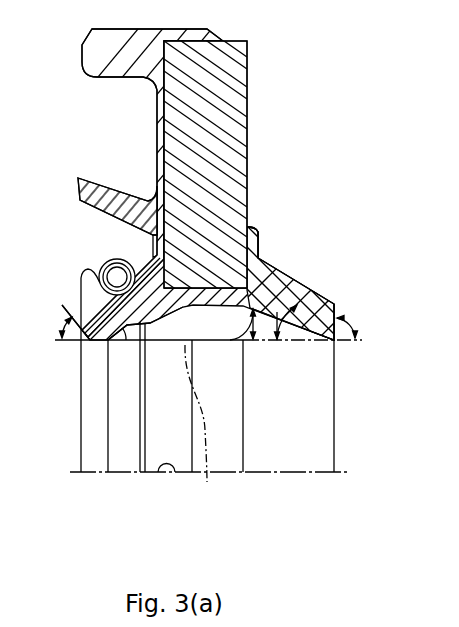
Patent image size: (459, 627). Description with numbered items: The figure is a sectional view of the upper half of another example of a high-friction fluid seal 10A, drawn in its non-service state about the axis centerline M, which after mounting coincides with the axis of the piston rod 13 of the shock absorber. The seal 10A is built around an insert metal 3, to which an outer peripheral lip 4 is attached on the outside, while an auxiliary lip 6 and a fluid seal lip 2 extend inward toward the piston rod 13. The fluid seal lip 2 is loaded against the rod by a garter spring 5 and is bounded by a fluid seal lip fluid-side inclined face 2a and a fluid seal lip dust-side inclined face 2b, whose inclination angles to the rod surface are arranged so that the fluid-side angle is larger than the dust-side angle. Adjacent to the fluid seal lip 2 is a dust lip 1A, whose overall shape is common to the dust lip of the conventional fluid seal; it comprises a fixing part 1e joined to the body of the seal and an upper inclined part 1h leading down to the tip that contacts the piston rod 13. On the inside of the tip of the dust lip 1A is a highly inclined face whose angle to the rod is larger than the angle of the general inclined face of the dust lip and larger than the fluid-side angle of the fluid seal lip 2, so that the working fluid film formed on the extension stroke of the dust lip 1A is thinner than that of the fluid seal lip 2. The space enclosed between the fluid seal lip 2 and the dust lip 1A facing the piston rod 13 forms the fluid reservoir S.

The high-friction fluid seal 10A is at (305, 85).
The dust lip 1A is at (339, 346).
The fixing part 1e is at (250, 226).
The upper inclined part 1h is at (282, 270).
The fluid seal lip 2 is at (104, 348).
The fluid seal lip fluid-side inclined face 2a is at (98, 346).
The fluid seal lip dust-side inclined face 2b is at (120, 348).
The insert metal 3 is at (247, 107).
The outer peripheral lip 4 is at (93, 84).
The garter spring 5 is at (105, 262).
The auxiliary lip 6 is at (96, 180).
The piston rod 13 is at (207, 482).
The axis centerline M is at (175, 482).
The fluid reservoir S is at (214, 330).